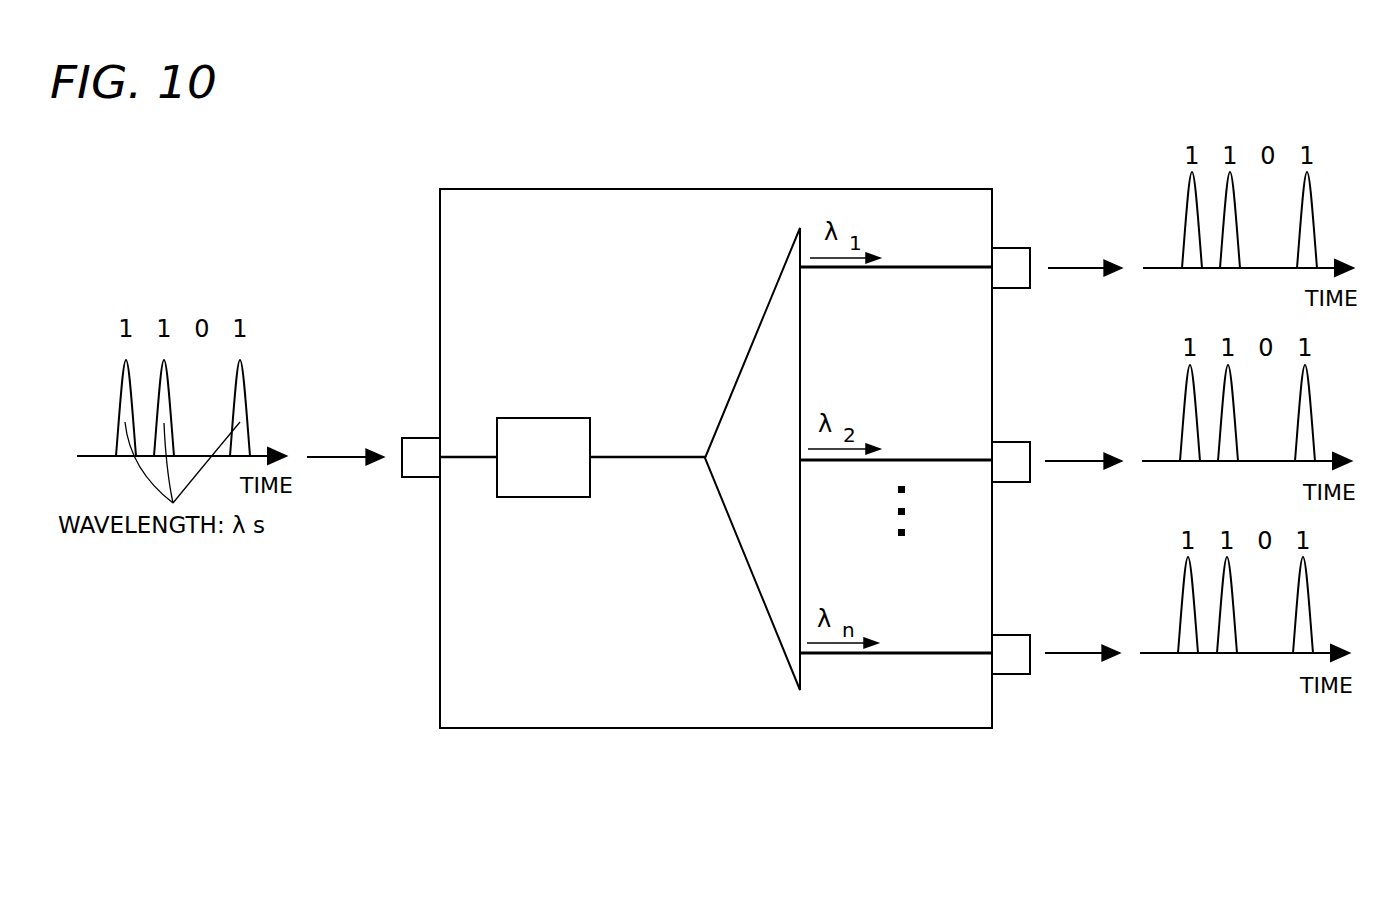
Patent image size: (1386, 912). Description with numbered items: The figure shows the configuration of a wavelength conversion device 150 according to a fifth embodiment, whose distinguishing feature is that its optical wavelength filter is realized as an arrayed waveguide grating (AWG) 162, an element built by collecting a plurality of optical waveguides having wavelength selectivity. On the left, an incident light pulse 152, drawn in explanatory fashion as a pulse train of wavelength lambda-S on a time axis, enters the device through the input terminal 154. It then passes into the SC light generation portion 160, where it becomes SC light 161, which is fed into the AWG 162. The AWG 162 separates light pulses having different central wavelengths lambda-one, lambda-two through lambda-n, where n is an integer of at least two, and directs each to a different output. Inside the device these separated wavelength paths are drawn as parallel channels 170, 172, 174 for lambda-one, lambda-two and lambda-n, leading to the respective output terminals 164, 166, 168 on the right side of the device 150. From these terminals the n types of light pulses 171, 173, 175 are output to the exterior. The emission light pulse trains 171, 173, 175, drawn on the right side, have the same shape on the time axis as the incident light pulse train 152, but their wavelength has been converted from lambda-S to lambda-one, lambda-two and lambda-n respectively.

The wavelength conversion device 150 is at (933, 189).
The incident light pulse 152 is at (345, 457).
The input terminal 154 is at (420, 438).
The SC light generation portion 160 is at (553, 418).
The SC light 161 is at (628, 457).
The arrayed waveguide grating (AWG) 162 is at (740, 552).
The output terminal 164 is at (1010, 248).
The output terminal 166 is at (1010, 442).
The output terminal 168 is at (1010, 635).
The optical filter channel for wavelength 1 170 is at (893, 267).
The emission light pulse train 171 is at (1067, 268).
The optical filter channel for wavelength 2 172 is at (893, 460).
The emission light pulse train 173 is at (1067, 461).
The optical filter channel for wavelength n 174 is at (890, 653).
The emission light pulse train 175 is at (1065, 653).